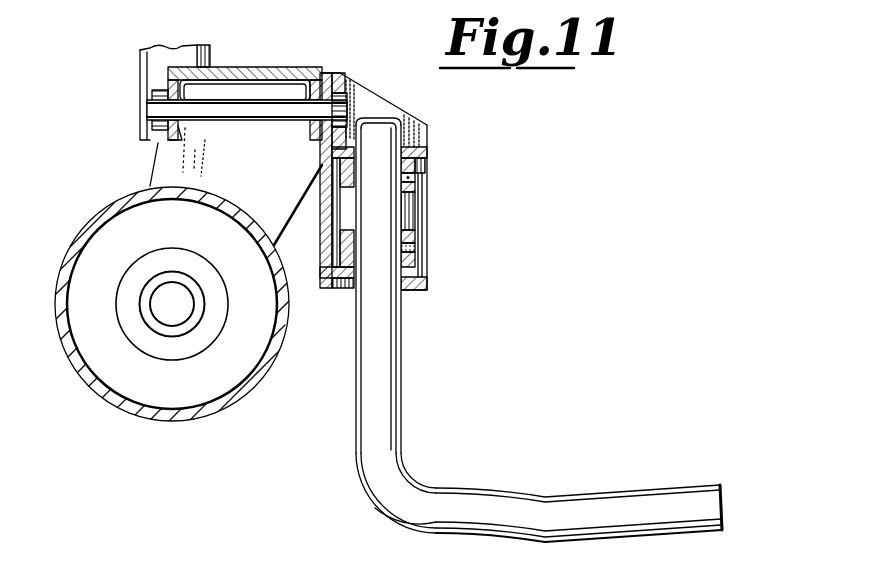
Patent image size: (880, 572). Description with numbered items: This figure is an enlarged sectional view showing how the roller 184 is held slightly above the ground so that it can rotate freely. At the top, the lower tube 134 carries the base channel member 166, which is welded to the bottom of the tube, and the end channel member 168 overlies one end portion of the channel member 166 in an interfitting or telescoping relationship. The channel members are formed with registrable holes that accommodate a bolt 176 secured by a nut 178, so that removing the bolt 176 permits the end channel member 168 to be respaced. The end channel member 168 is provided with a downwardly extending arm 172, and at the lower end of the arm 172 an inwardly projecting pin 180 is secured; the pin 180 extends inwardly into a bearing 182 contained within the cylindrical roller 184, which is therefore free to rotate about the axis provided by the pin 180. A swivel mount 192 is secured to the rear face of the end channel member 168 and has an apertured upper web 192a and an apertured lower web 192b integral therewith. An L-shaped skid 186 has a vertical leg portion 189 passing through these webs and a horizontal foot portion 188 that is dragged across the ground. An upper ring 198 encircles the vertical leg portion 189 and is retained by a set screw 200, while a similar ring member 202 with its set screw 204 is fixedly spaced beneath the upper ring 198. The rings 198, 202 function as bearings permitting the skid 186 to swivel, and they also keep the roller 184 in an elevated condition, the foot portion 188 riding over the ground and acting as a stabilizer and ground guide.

The lower tube 134 is at (143, 72).
The end channel member 168 is at (256, 67).
The channel member 166 is at (270, 82).
The nut 178 is at (343, 93).
The bolt 176 is at (240, 121).
The arm 172 is at (148, 167).
The pin 180 is at (188, 293).
The bearing 182 is at (140, 311).
The roller 184 is at (90, 387).
The upper web 192a is at (418, 147).
The set screw 200 is at (417, 173).
The upper ring 198 is at (420, 187).
The swivel mount 192 is at (440, 212).
The set screw 204 is at (417, 248).
The ring member 202 is at (420, 258).
The lower web 192b is at (422, 288).
The vertical leg portion 189 is at (402, 382).
The L-shaped skid 186 is at (356, 436).
The horizontal foot portion 188 is at (550, 497).